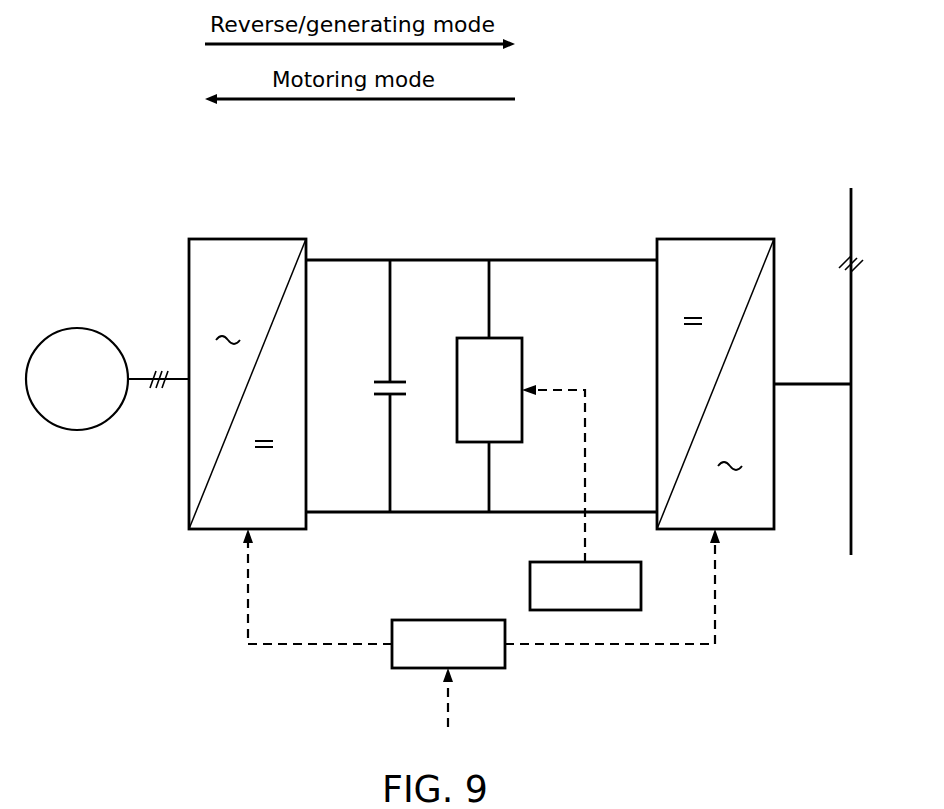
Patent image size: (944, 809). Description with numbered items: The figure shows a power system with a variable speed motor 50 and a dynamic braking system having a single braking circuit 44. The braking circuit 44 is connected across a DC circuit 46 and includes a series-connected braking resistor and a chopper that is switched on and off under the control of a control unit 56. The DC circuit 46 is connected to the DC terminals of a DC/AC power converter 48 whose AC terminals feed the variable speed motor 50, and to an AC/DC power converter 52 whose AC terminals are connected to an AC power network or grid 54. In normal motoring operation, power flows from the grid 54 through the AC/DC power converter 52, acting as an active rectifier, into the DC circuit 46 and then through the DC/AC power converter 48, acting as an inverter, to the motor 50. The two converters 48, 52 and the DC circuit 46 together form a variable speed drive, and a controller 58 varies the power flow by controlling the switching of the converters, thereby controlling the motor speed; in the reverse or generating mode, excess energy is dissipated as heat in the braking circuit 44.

The braking circuit 44 is at (476, 398).
The DC circuit 46 is at (401, 241).
The DC/AC power converter 48 is at (248, 238).
The variable speed motor 50 is at (77, 328).
The AC/DC power converter 52 is at (712, 238).
The AC power network or grid 54 is at (850, 212).
The control unit 56 is at (572, 598).
The controller 58 is at (435, 656).